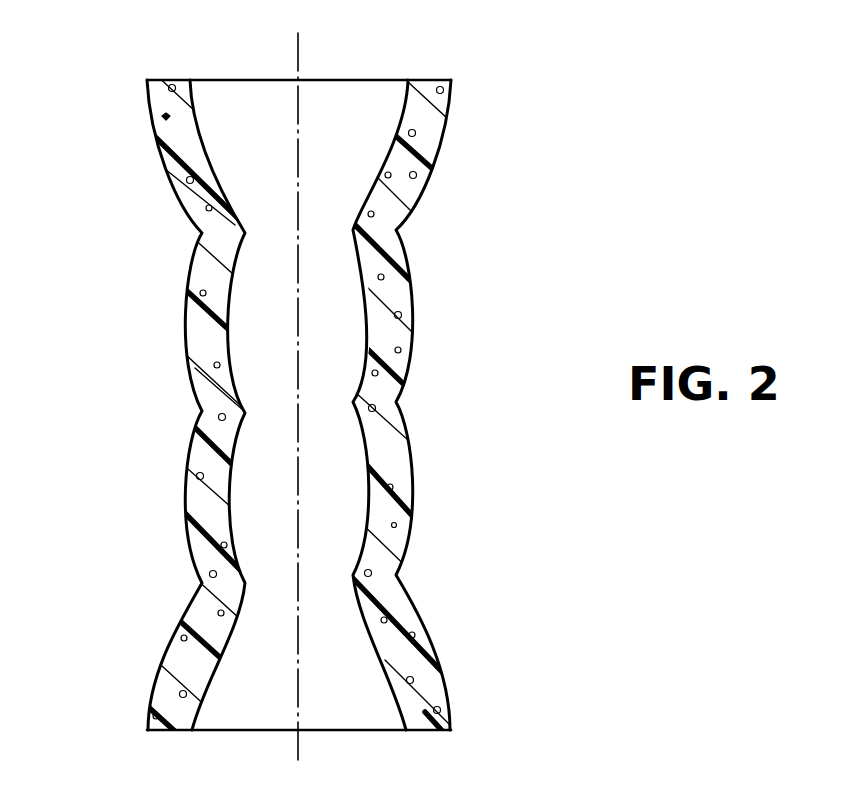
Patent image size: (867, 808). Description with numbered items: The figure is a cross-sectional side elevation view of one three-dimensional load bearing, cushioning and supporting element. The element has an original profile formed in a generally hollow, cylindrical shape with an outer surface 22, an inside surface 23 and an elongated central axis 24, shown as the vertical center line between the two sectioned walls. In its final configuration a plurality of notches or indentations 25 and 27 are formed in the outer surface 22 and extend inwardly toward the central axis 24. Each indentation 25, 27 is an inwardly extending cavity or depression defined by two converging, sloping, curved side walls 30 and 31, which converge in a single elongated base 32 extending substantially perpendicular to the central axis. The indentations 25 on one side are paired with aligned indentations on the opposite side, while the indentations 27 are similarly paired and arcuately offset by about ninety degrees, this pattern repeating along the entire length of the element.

The outer surface 22 is at (450, 92).
The inside surface 23 is at (193, 107).
The central axis 24 is at (299, 52).
The indentation 25 is at (401, 230).
The indentation 27 is at (199, 234).
The side wall 30 is at (150, 112).
The side wall 31 is at (155, 673).
The base 32 is at (208, 252).